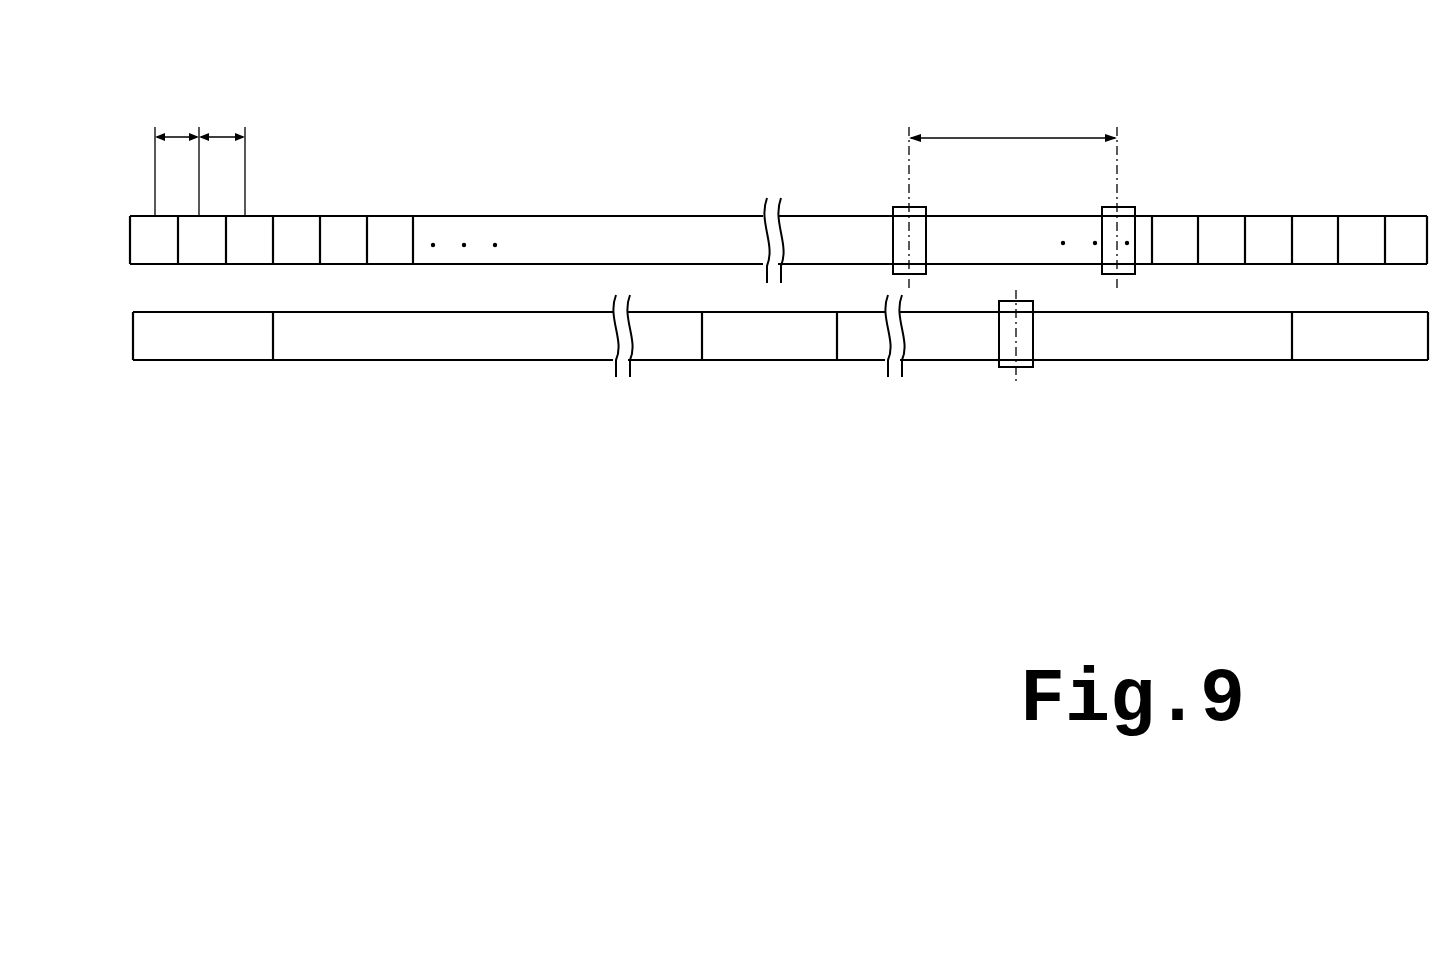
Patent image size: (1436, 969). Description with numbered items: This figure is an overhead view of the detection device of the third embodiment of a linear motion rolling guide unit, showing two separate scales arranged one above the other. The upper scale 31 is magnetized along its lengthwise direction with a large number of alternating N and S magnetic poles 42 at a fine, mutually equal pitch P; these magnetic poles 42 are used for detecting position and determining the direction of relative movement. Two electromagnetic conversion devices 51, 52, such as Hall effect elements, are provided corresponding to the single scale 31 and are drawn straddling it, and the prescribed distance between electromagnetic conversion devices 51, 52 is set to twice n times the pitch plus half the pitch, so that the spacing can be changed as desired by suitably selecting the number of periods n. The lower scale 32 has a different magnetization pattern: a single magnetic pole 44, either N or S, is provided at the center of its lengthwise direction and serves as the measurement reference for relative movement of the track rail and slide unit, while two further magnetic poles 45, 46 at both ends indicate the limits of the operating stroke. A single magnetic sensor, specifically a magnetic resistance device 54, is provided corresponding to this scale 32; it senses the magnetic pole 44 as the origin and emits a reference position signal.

The scale 31 is at (558, 214).
The scale 32 is at (521, 366).
The magnetic poles 42 is at (252, 223).
The magnetic pole 44 is at (805, 350).
The magnetic pole 45 is at (255, 352).
The magnetic pole 46 is at (1392, 348).
The electromagnetic conversion device 51 is at (1136, 207).
The electromagnetic conversion device 52 is at (893, 208).
The magnetic resistance device 54 is at (1022, 368).